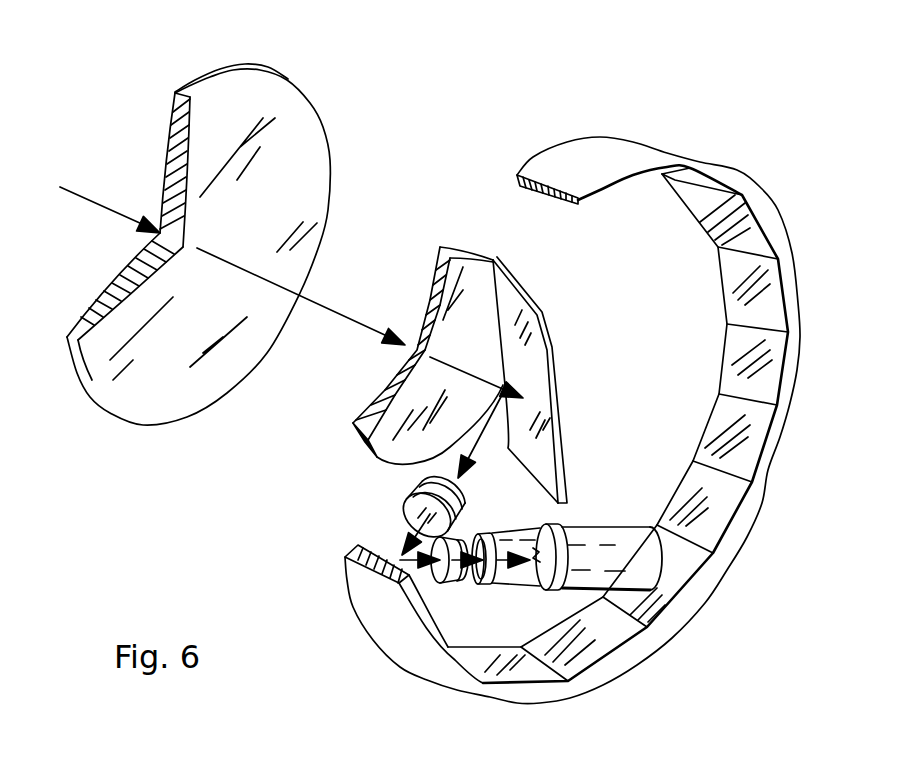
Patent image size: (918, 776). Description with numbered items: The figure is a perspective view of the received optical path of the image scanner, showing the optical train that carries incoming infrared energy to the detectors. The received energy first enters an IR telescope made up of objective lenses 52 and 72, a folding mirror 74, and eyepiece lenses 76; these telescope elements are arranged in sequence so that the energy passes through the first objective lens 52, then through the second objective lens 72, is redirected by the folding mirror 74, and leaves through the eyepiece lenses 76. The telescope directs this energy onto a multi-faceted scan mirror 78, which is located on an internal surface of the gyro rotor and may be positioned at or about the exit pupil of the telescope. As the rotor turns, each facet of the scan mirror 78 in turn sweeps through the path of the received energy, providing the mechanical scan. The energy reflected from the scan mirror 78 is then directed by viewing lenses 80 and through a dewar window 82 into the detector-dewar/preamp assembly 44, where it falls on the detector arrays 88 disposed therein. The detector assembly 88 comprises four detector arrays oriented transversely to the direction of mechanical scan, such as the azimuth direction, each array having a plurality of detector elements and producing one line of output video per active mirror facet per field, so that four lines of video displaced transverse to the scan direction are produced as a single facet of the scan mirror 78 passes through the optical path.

The detector-dewar/preamp assembly 44 is at (653, 567).
The objective lens 52 is at (325, 132).
The objective lens 72 is at (467, 245).
The folding mirror 74 is at (543, 321).
The eyepiece lenses 76 is at (410, 497).
The scan mirror 78 is at (383, 630).
The viewing lenses 80 is at (449, 588).
The dewar window 82 is at (473, 545).
The detector arrays 88 is at (547, 530).